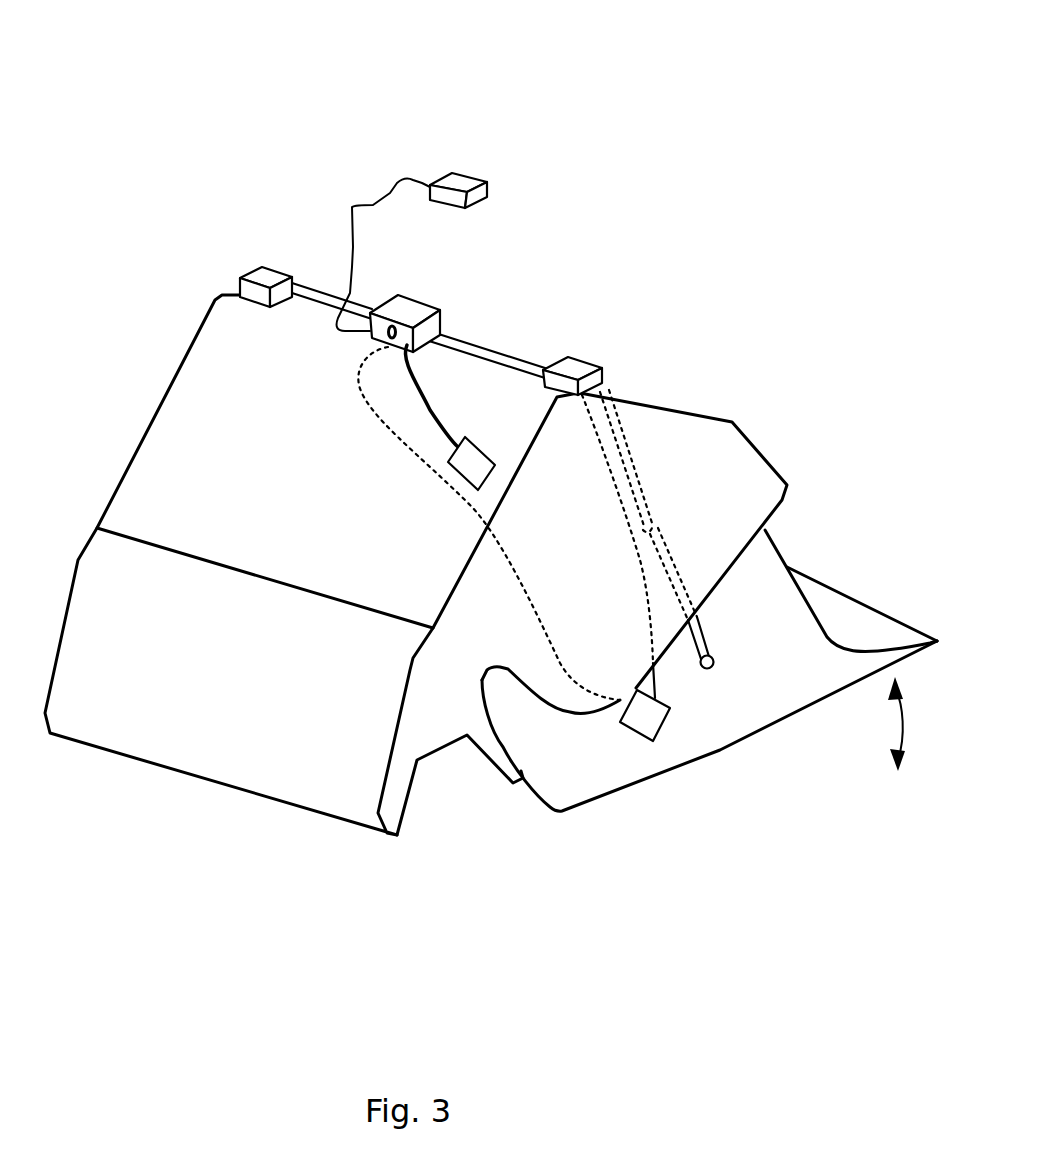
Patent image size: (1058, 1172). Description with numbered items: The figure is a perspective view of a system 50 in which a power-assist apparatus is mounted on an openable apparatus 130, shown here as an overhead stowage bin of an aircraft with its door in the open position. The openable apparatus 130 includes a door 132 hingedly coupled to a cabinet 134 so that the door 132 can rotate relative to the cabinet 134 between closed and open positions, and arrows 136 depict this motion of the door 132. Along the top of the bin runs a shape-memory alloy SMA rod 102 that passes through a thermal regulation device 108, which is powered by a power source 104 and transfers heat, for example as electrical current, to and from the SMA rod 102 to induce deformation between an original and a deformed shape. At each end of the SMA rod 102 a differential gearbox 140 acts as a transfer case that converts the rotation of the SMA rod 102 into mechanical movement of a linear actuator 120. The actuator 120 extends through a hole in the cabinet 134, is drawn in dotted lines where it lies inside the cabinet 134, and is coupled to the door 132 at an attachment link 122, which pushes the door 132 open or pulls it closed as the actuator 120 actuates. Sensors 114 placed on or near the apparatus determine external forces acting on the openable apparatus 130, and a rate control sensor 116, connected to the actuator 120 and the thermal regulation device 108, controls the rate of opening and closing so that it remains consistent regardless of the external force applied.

The system 50 is at (228, 97).
The SMA rod 102 is at (322, 298).
The power source 104 is at (462, 180).
The thermal regulation device 108 is at (413, 313).
The sensors 114 is at (478, 437).
The rate control sensor 116 is at (643, 728).
The actuator 120 is at (698, 628).
The attachment link 122 is at (714, 661).
The openable apparatus 130 is at (760, 423).
The door 132 is at (840, 630).
The cabinet 134 is at (650, 423).
The arrows 136 is at (897, 737).
The differential gearbox 140 is at (263, 278).